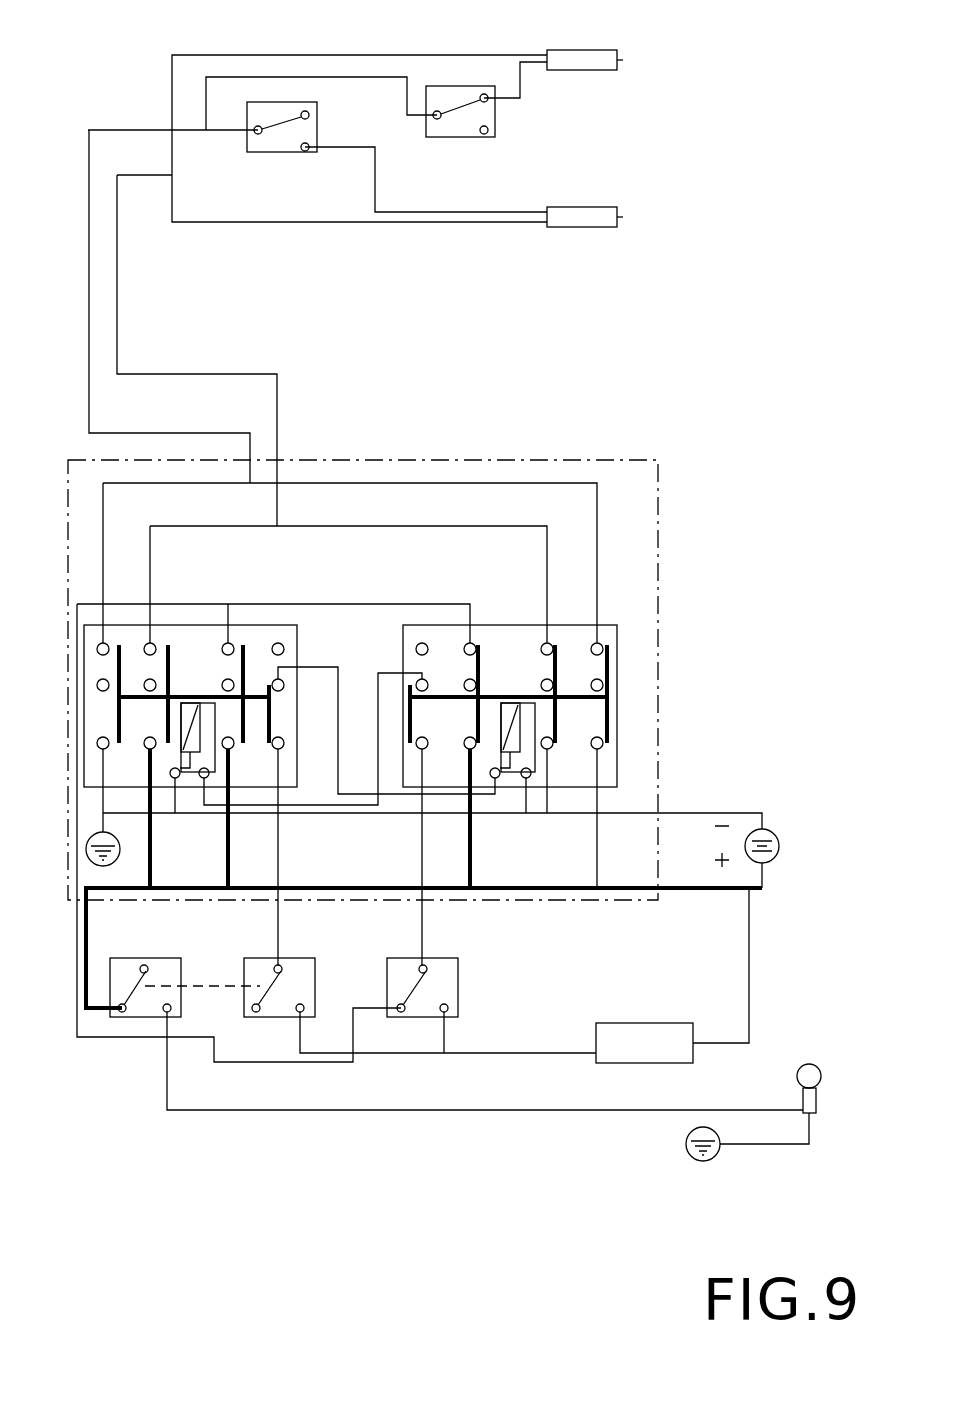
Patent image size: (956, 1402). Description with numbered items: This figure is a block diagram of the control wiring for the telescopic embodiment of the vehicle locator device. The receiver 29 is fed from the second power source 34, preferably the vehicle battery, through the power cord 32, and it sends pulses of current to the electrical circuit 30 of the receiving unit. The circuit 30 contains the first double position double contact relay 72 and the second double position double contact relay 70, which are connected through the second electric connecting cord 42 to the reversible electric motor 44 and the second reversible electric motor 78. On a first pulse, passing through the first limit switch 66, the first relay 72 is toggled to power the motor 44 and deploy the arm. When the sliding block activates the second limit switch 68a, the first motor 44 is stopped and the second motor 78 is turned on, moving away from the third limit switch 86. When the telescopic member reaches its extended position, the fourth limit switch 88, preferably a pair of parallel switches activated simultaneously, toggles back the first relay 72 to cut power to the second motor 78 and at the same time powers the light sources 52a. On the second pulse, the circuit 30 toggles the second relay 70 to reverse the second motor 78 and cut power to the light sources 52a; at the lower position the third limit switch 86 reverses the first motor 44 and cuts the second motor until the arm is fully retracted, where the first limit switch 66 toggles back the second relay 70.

The reversible electric motor 44 is at (582, 50).
The second reversible electric motor 78 is at (585, 207).
The second limit switch 68a is at (290, 152).
The third limit switch 86 is at (481, 138).
The second electric connecting cord 42 is at (89, 289).
The electrical circuit 30 is at (636, 458).
The second double position double contact relay 70 is at (298, 640).
The first double position double contact relay 72 is at (485, 625).
The second power source 34 is at (780, 842).
The power cord 32 is at (750, 940).
The receiver 29 is at (610, 1023).
The fourth limit switch 88 is at (164, 958).
The first limit switch 66 is at (445, 958).
The light sources 52a is at (855, 1050).